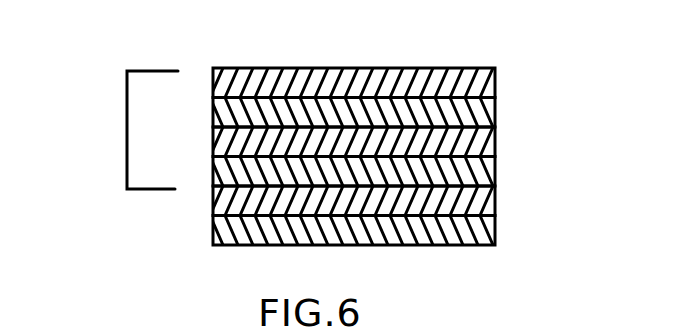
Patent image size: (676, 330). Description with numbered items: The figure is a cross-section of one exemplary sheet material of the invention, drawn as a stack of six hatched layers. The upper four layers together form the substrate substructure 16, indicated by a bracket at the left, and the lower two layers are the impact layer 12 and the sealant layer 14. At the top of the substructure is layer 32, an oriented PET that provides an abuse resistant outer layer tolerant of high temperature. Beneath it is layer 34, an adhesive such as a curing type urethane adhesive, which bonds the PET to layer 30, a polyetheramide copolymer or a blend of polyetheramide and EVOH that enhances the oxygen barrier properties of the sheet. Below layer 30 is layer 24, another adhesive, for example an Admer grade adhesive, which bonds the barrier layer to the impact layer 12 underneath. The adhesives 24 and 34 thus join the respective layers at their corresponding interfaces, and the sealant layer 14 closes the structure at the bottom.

The oriented PET layer 32 is at (495, 79).
The adhesive layer 34 is at (495, 107).
The polyetheramide copolymer layer 30 is at (495, 140).
The adhesive layer 24 is at (495, 168).
The impact layer 12 is at (495, 198).
The sealant layer 14 is at (495, 227).
The substrate substructure 16 is at (127, 129).